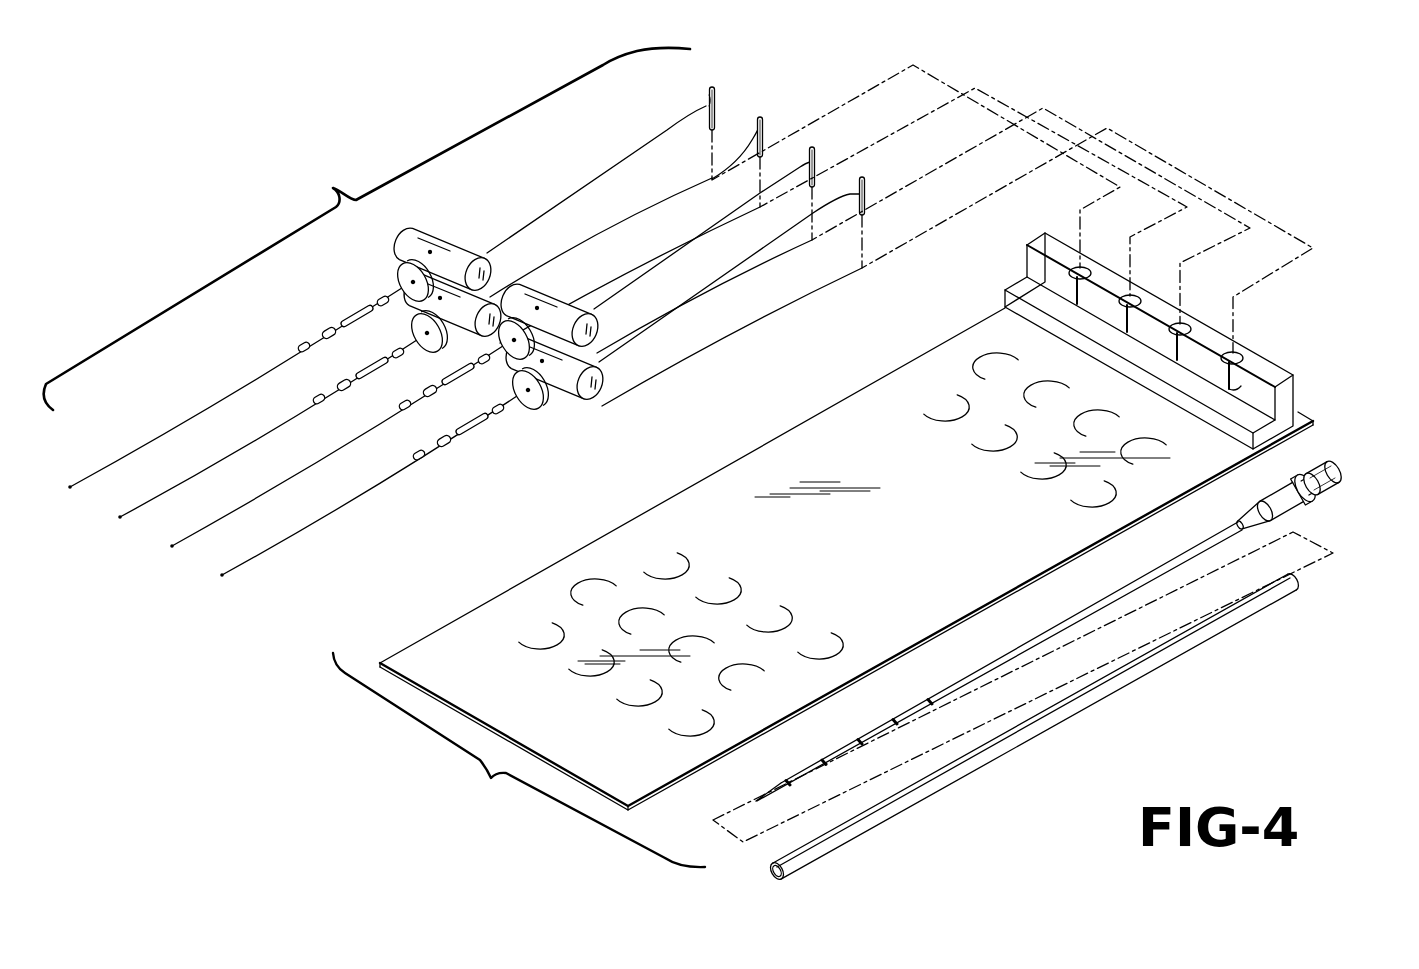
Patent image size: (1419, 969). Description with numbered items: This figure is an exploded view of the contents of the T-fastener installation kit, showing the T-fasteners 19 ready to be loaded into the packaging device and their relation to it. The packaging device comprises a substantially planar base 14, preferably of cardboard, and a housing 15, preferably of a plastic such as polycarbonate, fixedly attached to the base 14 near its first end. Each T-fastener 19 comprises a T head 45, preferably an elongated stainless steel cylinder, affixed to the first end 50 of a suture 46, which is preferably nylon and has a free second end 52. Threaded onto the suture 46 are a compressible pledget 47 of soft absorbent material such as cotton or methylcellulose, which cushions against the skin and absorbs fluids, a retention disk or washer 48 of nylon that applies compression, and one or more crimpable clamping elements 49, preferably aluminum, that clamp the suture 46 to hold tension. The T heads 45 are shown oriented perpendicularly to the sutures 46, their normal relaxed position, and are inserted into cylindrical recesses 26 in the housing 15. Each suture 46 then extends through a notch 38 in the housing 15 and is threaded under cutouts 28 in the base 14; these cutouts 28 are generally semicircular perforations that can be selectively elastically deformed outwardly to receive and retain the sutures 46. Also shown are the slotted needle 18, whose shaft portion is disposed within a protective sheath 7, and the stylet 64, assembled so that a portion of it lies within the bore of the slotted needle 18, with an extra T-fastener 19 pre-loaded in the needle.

The protective sheath 7 is at (1085, 695).
The base 14 is at (838, 435).
The housing 15 is at (1292, 405).
The slotted needle 18 is at (1289, 503).
The T-fastener 19 is at (333, 194).
The cylindrical recess 26 is at (1243, 352).
The cutout 28 is at (985, 362).
The notch 38 is at (1243, 378).
The T head 45 is at (716, 92).
The suture 46 is at (607, 172).
The compressible pledget 47 is at (453, 247).
The retention disk 48 is at (403, 270).
The crimpable clamping element 49 is at (397, 288).
The first end 50 is at (705, 107).
The second end 52 is at (80, 478).
The stylet 64 is at (1333, 478).